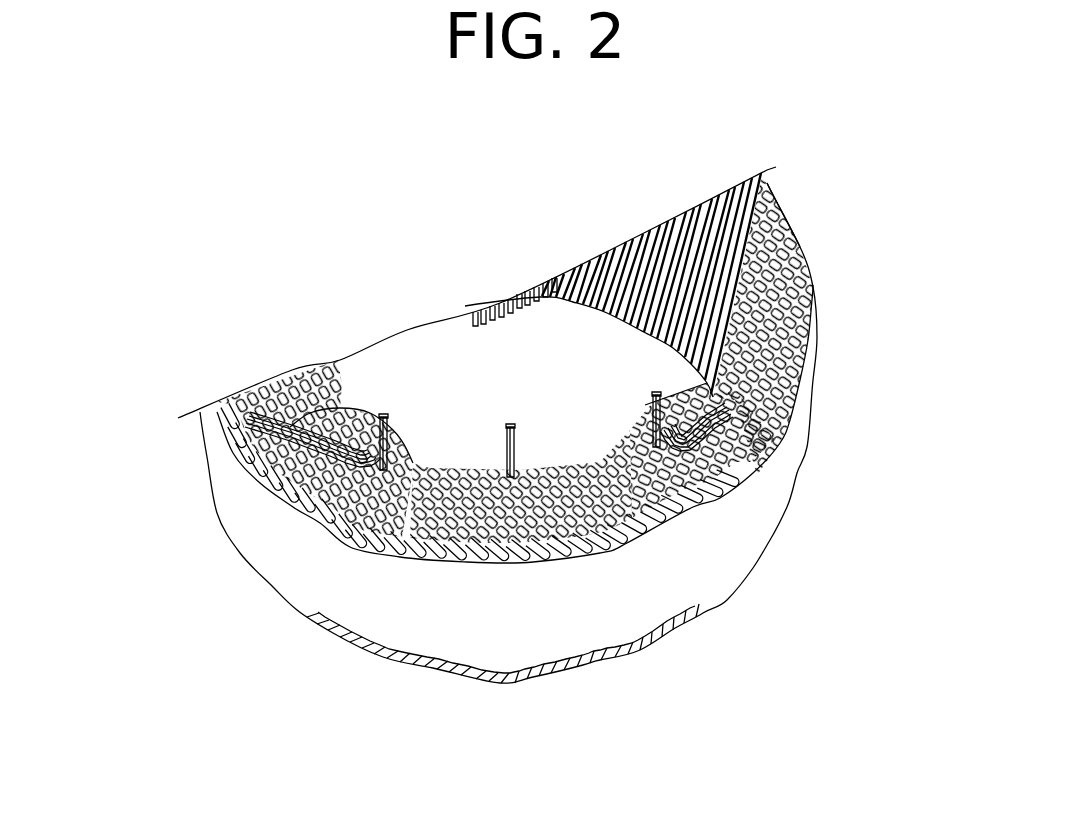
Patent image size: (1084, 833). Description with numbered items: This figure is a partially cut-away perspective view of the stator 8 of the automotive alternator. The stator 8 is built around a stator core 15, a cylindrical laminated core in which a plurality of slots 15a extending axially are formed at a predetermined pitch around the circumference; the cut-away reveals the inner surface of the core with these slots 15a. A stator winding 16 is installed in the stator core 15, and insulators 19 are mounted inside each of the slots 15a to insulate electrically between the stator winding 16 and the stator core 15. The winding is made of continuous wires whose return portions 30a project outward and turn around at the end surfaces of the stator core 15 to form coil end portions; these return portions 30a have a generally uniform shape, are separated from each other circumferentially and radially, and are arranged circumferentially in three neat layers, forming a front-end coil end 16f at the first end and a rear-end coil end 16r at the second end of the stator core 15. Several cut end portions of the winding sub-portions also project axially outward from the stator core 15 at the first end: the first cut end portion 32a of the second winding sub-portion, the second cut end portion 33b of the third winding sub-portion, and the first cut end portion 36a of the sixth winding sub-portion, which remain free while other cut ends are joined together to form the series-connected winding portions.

The stator 8 is at (827, 453).
The stator core 15 is at (737, 547).
The slots 15a is at (728, 495).
The stator winding 16 is at (813, 268).
The rear-end coil end 16r is at (795, 233).
The front-end coil end 16f is at (653, 660).
The insulators 19 is at (725, 475).
The return portions 30a is at (792, 202).
The first cut end portion of the second winding sub-portion 32a is at (522, 425).
The second cut end portion of the third winding sub-portion 33b is at (795, 318).
The first cut end portion of the sixth winding sub-portion 36a is at (770, 410).